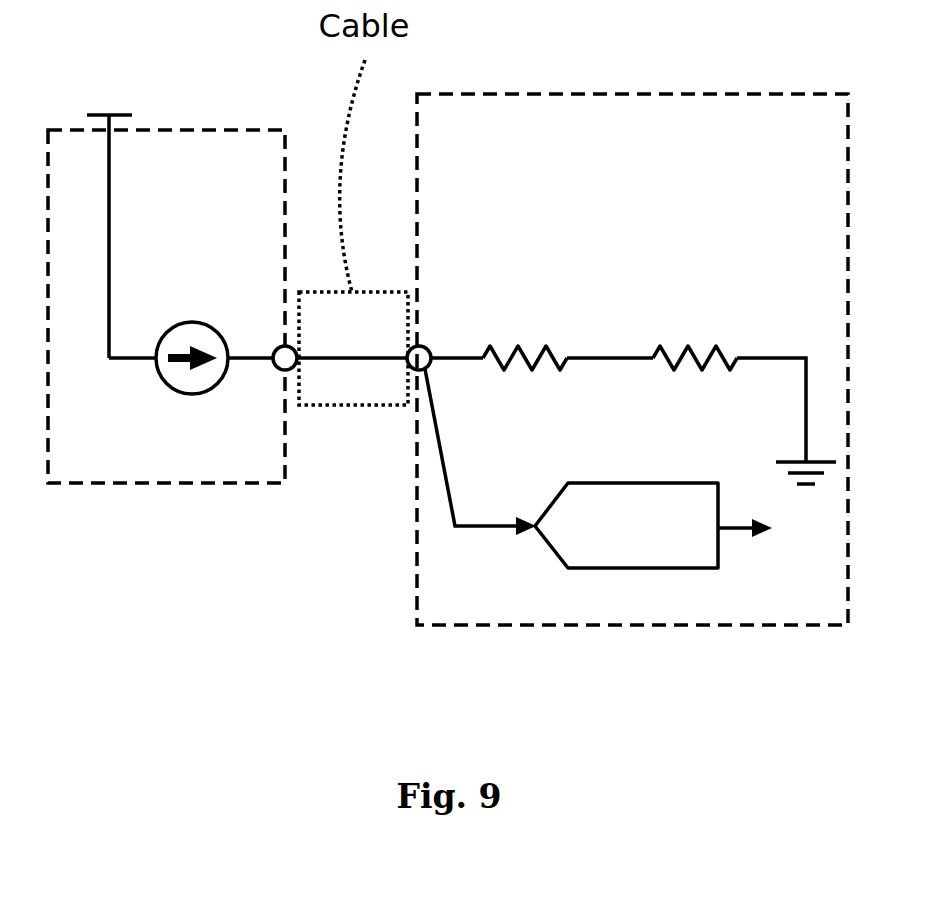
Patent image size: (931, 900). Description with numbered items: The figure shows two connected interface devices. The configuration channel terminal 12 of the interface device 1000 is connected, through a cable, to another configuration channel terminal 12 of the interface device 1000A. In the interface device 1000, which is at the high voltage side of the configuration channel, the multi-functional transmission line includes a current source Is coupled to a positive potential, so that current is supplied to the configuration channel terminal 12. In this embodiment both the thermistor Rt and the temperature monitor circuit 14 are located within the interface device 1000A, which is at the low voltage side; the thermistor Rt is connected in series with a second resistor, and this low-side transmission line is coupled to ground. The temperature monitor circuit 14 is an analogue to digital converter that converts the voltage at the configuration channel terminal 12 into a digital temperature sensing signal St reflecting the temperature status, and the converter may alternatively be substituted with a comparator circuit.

The configuration channel terminal 12 is at (276, 346).
The temperature monitor circuit 14 is at (620, 483).
The interface device 1000 is at (263, 128).
The interface device 1000A is at (632, 316).